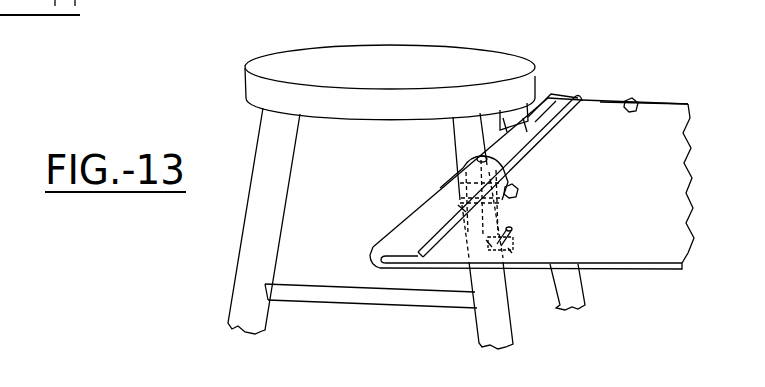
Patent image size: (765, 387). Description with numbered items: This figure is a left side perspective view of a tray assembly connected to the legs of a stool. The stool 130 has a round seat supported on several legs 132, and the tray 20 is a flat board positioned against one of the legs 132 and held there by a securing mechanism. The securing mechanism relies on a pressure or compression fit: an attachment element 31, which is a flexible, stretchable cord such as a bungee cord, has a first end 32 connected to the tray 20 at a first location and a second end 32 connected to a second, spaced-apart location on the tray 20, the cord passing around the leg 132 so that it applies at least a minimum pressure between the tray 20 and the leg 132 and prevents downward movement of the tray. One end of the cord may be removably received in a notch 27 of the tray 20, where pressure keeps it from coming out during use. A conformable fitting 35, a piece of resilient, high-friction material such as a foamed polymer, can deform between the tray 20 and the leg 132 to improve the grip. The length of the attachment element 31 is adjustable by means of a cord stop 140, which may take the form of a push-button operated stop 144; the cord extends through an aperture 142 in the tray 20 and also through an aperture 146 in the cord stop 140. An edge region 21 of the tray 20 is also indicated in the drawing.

The tray 20 is at (633, 266).
The edge of board 21 is at (664, 113).
The notch 27 is at (528, 117).
The attachment element 31 is at (462, 208).
The end of attachment element 32 is at (628, 112).
The conformable fitting 35 is at (438, 188).
The stool 130 is at (315, 63).
The leg 132 is at (239, 265).
The cord stop 140 is at (515, 243).
The aperture 142 is at (562, 297).
The push-button operated stop 144 is at (488, 240).
The aperture 146 is at (508, 248).